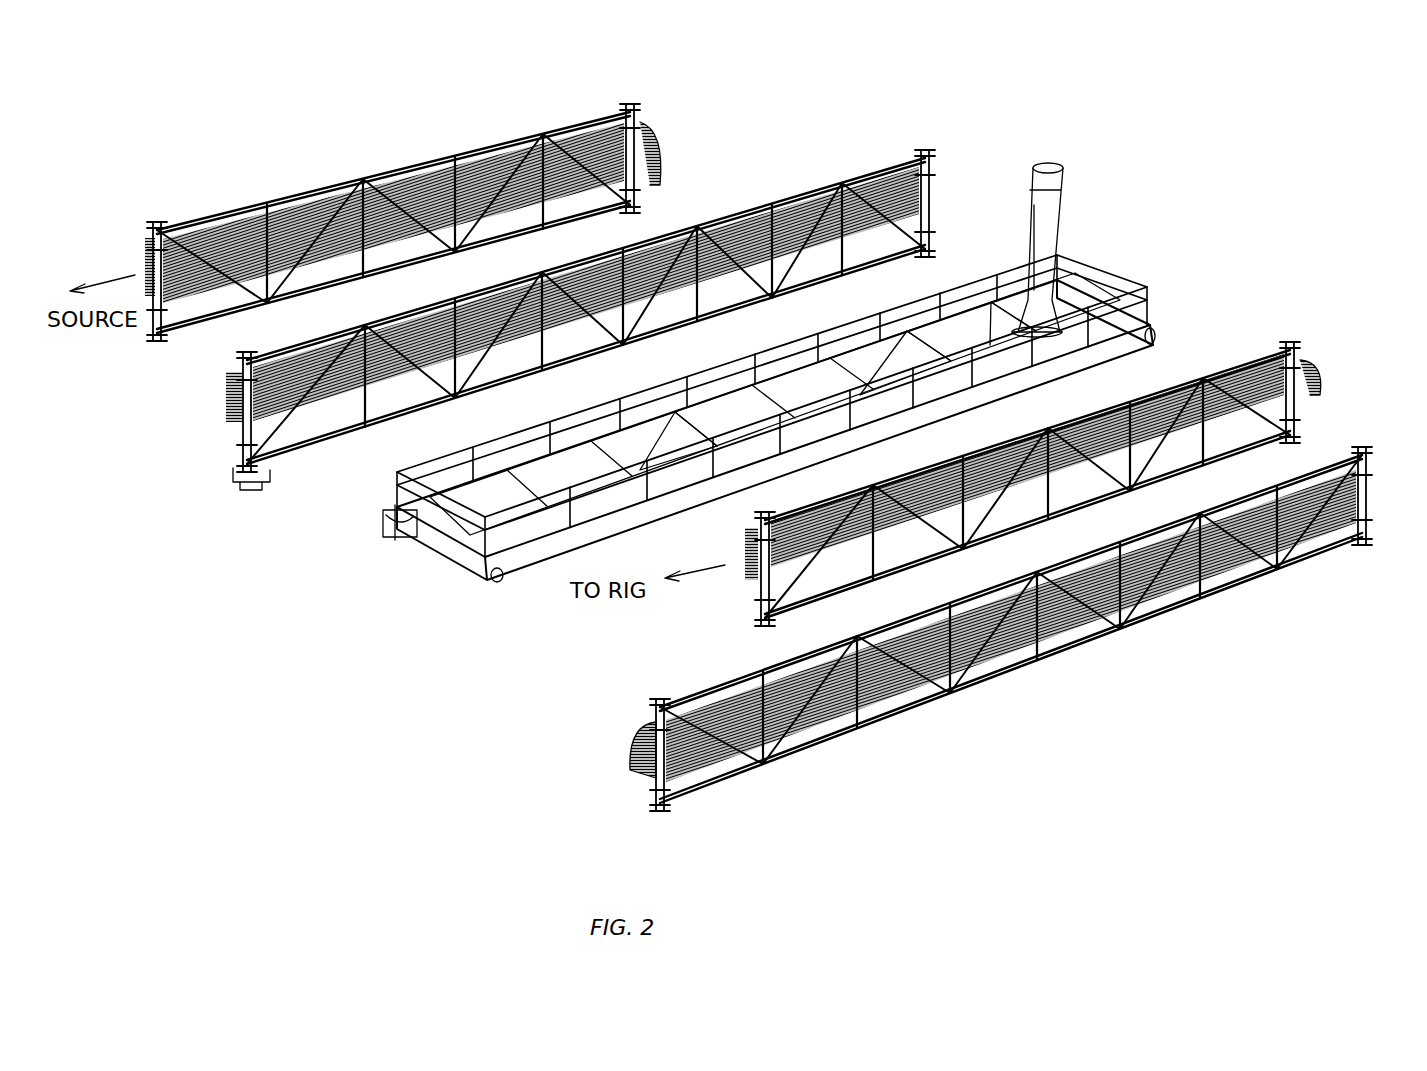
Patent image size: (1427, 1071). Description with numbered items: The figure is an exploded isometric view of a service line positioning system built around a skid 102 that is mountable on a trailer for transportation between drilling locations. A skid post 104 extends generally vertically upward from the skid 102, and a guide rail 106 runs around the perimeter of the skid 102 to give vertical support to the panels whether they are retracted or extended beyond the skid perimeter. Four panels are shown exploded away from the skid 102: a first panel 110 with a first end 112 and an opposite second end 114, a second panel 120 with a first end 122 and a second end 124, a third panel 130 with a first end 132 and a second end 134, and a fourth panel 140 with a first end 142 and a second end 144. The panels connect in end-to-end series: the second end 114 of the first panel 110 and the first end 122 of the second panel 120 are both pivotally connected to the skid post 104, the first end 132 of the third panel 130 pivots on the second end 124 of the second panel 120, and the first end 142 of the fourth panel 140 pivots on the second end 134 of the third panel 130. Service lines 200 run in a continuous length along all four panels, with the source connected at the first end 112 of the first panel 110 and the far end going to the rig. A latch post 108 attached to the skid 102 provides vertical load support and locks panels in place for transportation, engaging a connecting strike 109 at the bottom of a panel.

The skid 102 is at (757, 367).
The skid post 104 is at (1060, 163).
The guide rail 106 is at (1098, 272).
The latch post 108 is at (400, 533).
The connecting strike 109 is at (253, 478).
The first panel 110 is at (394, 204).
The first end of first panel 112 is at (152, 226).
The second end of first panel 114 is at (648, 104).
The second panel 120 is at (590, 313).
The first end of second panel 122 is at (937, 152).
The second end of second panel 124 is at (233, 353).
The third panel 130 is at (1003, 611).
The first end of third panel 132 is at (647, 700).
The second end of third panel 134 is at (1372, 445).
The fourth panel 140 is at (1037, 462).
The first end of fourth panel 142 is at (1308, 340).
The second end of fourth panel 144 is at (745, 518).
The service lines 200 is at (1323, 390).